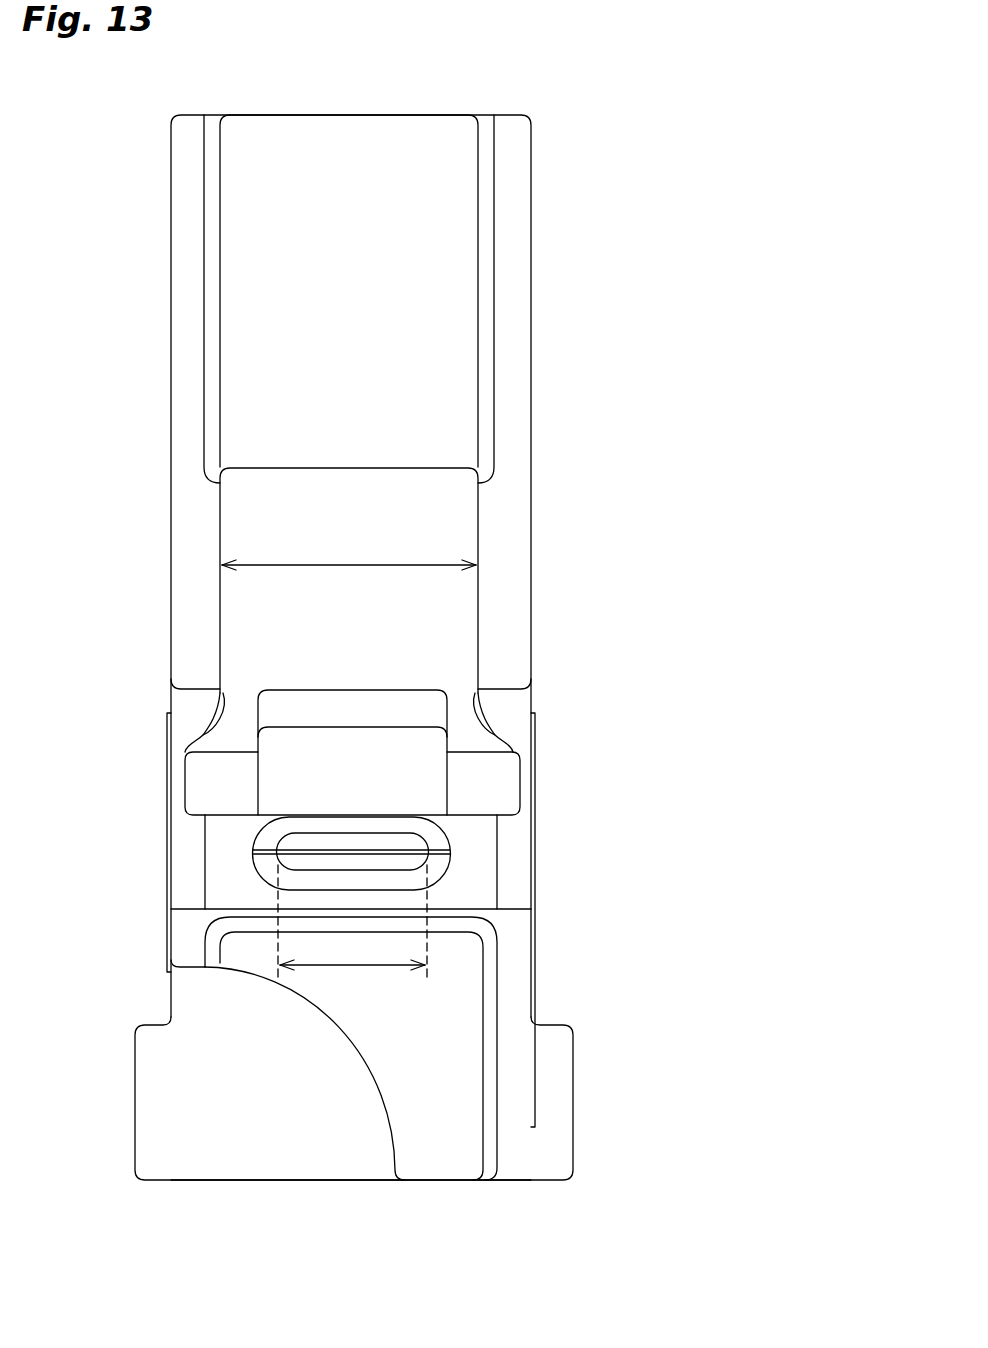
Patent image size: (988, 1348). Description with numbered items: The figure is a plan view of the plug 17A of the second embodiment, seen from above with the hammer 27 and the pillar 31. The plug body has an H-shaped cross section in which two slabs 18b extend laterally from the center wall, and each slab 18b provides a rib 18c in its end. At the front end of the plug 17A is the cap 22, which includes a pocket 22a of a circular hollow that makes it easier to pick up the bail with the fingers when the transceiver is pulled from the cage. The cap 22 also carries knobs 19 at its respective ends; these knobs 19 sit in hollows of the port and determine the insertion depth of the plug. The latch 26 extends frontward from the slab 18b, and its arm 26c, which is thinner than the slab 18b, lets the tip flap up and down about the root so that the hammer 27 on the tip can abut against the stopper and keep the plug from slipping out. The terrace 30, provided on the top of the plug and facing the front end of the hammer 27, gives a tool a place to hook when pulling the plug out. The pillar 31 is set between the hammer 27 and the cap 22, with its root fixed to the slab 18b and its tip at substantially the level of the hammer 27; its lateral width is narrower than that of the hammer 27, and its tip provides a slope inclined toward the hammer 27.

The plug 17A is at (597, 116).
The slab 18b is at (437, 287).
The rib 18c is at (167, 925).
The knob 19 is at (150, 1071).
The cap 22 is at (440, 1182).
The pocket 22a is at (272, 1090).
The latch 26 is at (423, 580).
The arm 26c is at (448, 532).
The hammer 27 is at (472, 777).
The terrace 30 is at (493, 942).
The pillar 31 is at (412, 845).